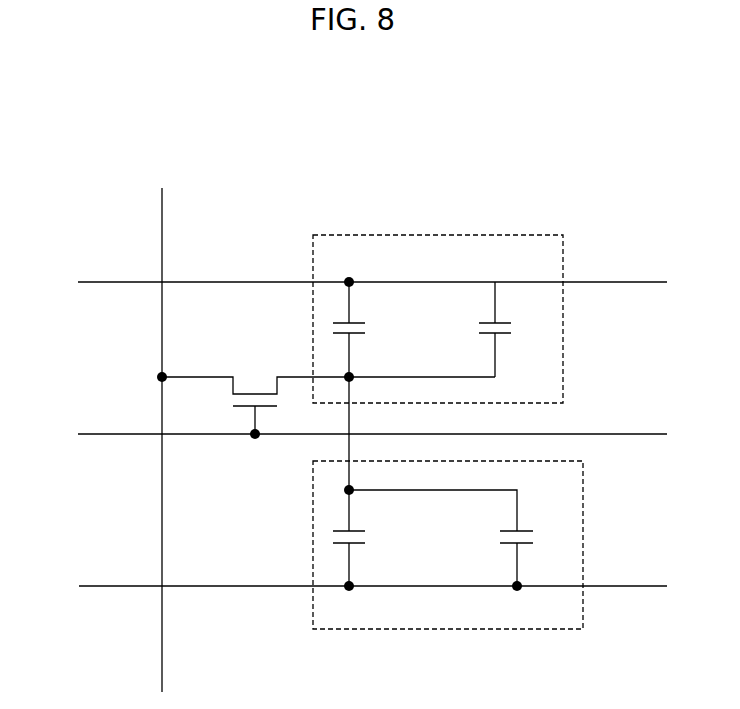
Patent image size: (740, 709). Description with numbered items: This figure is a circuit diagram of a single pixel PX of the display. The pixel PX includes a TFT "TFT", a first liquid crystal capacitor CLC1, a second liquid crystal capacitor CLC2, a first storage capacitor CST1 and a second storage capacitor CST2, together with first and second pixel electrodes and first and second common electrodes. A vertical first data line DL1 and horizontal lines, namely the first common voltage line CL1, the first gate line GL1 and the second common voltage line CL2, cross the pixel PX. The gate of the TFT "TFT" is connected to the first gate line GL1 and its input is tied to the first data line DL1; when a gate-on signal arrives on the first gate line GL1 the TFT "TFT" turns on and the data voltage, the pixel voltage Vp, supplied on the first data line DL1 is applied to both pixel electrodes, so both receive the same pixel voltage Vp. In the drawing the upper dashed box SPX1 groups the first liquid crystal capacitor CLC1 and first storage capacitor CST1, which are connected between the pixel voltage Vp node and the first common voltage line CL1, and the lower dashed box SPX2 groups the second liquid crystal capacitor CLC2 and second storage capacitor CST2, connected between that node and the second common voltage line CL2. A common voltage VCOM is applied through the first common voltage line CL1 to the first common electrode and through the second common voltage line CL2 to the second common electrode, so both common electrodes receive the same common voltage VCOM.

The first data line DL1 is at (163, 421).
The first common voltage line CL1 is at (350, 283).
The first gate line GL1 is at (350, 435).
The second common voltage line CL2 is at (350, 587).
The pixel PX is at (621, 166).
The element TFT is at (258, 367).
The first sub-pixel SPX1 is at (490, 235).
The second sub-pixel SPX2 is at (535, 630).
The first liquid crystal capacitor CLC1 is at (371, 329).
The first storage capacitor CST1 is at (453, 329).
The second liquid crystal capacitor CLC2 is at (372, 538).
The second storage capacitor CST2 is at (463, 538).
The common voltage VCOM is at (426, 435).
The pixel voltage Vp is at (360, 362).